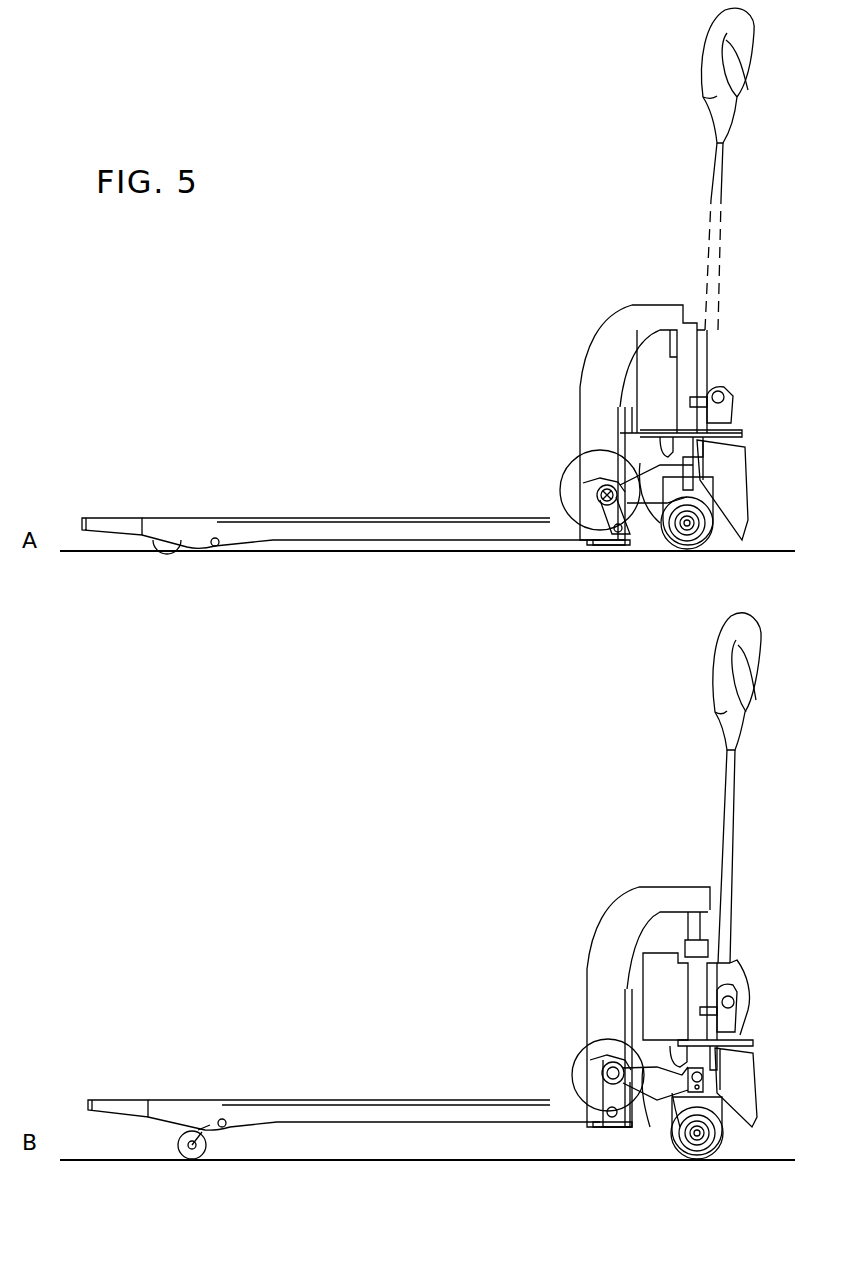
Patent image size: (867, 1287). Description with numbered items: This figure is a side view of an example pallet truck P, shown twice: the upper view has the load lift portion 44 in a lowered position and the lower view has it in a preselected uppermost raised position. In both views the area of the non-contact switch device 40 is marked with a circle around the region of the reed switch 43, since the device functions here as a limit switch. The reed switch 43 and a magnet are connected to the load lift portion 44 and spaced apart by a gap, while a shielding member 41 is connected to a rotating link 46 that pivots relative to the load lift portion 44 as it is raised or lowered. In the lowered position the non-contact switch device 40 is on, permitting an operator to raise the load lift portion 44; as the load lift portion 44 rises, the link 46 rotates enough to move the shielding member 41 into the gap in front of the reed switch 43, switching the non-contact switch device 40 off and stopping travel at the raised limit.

The pallet truck P is at (595, 357).
The load lift portion 44 is at (590, 413).
The reed switch 43 is at (603, 477).
The shielding member 41 is at (597, 494).
The rotating link 46 is at (600, 500).
The non-contact switch device 40 is at (587, 527).